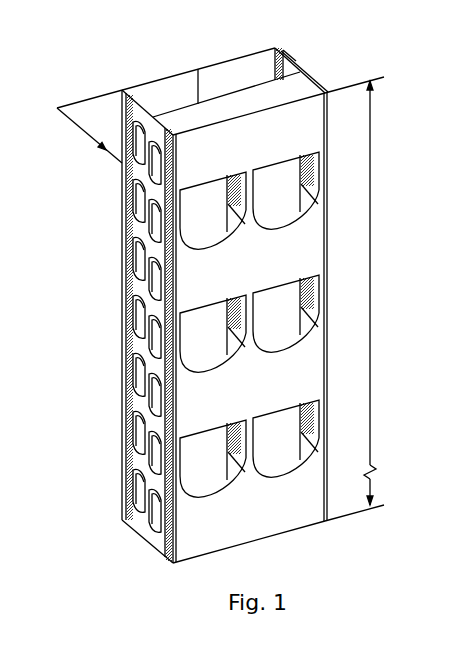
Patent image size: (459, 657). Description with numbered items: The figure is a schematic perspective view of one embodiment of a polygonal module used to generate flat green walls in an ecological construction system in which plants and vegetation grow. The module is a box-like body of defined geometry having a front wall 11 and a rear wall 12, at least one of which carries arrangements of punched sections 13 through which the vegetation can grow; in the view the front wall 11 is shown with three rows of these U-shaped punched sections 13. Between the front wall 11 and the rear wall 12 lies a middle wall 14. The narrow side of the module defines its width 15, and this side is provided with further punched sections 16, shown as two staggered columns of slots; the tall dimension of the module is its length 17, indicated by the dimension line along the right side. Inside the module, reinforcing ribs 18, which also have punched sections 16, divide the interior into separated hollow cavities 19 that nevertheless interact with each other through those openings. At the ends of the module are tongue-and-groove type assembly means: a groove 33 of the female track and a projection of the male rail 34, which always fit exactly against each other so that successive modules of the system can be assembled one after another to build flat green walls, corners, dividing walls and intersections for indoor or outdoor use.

The front wall 11 is at (262, 56).
The rear wall 12 is at (320, 133).
The punched sections 13 is at (310, 203).
The middle wall 14 is at (296, 60).
The width 15 is at (95, 305).
The punched sections 16 is at (127, 205).
The length 17 is at (363, 299).
The reinforcing ribs 18 is at (198, 74).
The hollow cavities 19 is at (173, 100).
The groove of the female track 33 is at (122, 89).
The projection of the male rail 34 is at (280, 47).